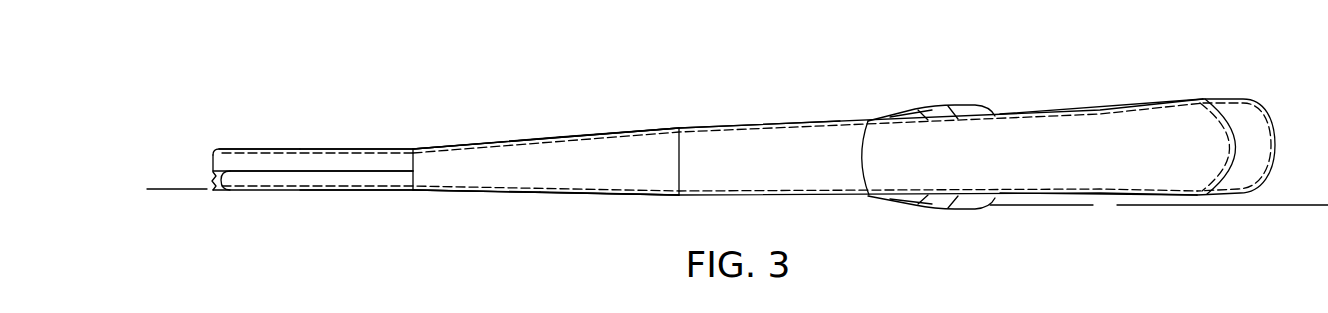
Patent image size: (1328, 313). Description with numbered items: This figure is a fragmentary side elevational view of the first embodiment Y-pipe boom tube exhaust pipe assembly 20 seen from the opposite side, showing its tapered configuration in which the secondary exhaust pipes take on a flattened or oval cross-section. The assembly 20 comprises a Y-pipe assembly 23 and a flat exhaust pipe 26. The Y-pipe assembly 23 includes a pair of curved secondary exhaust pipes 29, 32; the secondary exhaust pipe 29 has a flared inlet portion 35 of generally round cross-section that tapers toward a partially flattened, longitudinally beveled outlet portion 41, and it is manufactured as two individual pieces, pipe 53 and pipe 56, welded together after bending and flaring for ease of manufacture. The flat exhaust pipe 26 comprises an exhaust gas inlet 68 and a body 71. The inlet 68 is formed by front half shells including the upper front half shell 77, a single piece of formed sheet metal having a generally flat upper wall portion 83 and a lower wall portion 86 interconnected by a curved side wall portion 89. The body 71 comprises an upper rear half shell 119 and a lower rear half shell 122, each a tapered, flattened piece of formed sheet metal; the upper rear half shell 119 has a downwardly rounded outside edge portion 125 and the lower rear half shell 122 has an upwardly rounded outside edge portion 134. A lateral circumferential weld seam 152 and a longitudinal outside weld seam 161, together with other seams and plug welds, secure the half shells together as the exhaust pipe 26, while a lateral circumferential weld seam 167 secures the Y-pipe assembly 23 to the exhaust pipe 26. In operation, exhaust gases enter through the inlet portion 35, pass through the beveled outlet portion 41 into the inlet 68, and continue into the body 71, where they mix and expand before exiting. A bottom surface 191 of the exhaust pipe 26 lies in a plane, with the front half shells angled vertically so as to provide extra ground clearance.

The Y-pipe boom tube exhaust pipe assembly 20 is at (1007, 73).
The Y-pipe assembly 23 is at (899, 90).
The flat exhaust pipe 26 is at (589, 100).
The secondary exhaust pipe 29 is at (1103, 212).
The secondary exhaust pipe 32 is at (954, 93).
The flared inlet portion 35 is at (1218, 98).
The beveled outlet portion 41 is at (765, 123).
The pipe 53 is at (1130, 108).
The pipe 56 is at (805, 122).
The exhaust gas inlet 68 is at (630, 120).
The body 71 is at (274, 137).
The upper front half shell 77 is at (525, 197).
The upper wall portion 83 is at (493, 142).
The lower wall portion 86 is at (475, 197).
The curved side wall portion 89 is at (540, 168).
The upper rear half shell 119 is at (350, 149).
The lower rear half shell 122 is at (378, 190).
The outside edge portion 125 is at (248, 163).
The outside edge portion 134 is at (262, 177).
The lateral circumferential weld seam 152 is at (415, 163).
The longitudinal outside weld seam 161 is at (322, 172).
The lateral circumferential weld seam 167 is at (680, 157).
The bottom surface 191 is at (233, 190).